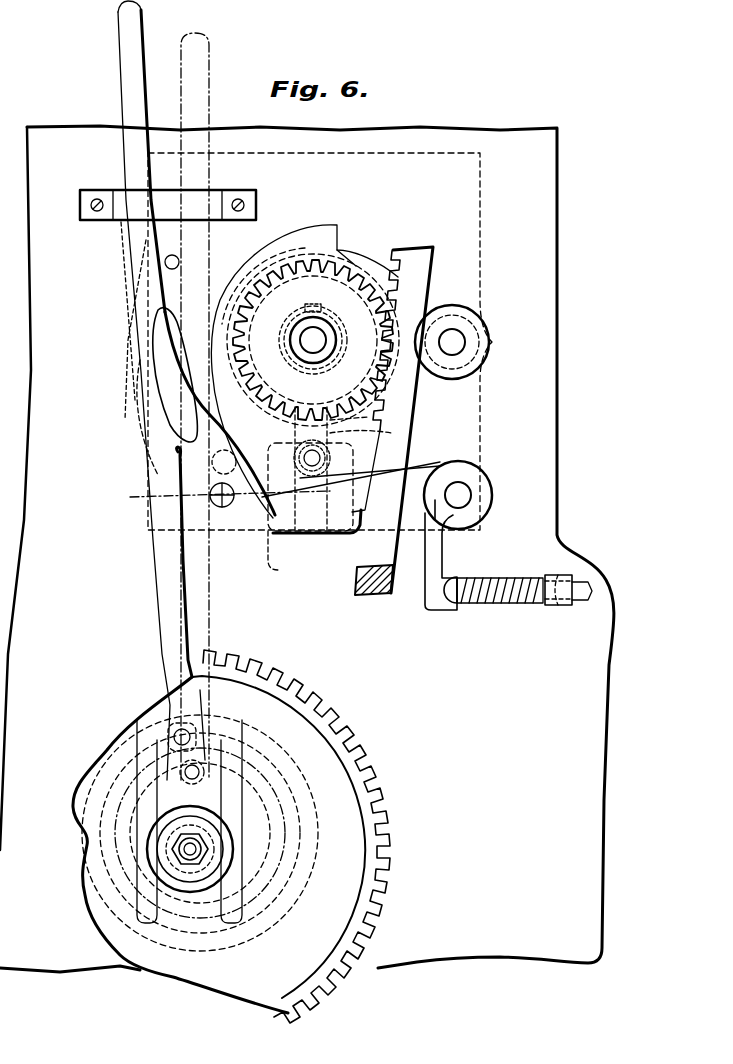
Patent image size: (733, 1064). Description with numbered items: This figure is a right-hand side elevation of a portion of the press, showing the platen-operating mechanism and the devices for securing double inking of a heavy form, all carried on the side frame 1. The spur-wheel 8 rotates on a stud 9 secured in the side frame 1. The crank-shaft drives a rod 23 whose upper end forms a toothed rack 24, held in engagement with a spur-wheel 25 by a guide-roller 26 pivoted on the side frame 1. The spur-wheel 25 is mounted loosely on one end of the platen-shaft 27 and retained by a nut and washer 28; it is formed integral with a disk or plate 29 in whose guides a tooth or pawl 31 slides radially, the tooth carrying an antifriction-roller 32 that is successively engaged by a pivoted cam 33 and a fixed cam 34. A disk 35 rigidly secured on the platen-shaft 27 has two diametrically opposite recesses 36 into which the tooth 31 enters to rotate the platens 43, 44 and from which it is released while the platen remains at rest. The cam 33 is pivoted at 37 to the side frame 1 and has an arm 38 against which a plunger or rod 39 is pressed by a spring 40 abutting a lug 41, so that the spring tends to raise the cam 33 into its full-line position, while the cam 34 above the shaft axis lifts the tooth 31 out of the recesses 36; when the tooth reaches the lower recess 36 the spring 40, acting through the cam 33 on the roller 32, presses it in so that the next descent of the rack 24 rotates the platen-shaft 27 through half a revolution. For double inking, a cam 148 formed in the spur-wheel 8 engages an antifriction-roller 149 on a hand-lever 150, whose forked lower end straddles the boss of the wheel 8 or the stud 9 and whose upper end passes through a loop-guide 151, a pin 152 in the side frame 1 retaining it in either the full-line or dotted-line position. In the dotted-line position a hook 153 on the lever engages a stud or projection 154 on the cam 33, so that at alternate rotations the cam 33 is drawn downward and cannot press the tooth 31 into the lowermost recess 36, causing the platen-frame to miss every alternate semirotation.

The side frame 1 is at (307, 549).
The spur-wheel 8 is at (290, 690).
The stud 9 is at (222, 860).
The rod 23 is at (374, 558).
The toothed rack 24 is at (417, 284).
The spur-wheel 25 is at (313, 340).
The guide-roller 26 is at (484, 344).
The platen-shaft 27 is at (320, 345).
The nut and washer 28 is at (298, 341).
The disk or plate 29 is at (380, 268).
The tooth or pawl 31 is at (395, 417).
The antifriction-roller 32 is at (305, 533).
The cam 33 is at (160, 345).
The cam 34 is at (312, 238).
The disk 35 is at (395, 436).
The recesses 36 is at (343, 254).
The pivot 37 is at (466, 497).
The arm 38 is at (432, 600).
The plunger or rod 39 is at (513, 578).
The spring 40 is at (512, 604).
The lug 41 is at (565, 608).
The platen 43 is at (330, 153).
The platen 44 is at (272, 545).
The cam 148 is at (286, 827).
The antifriction-roller 149 is at (186, 766).
The hand-lever 150 is at (130, 92).
The loop-guide 151 is at (203, 200).
The pin 152 is at (179, 260).
The hook 153 is at (236, 458).
The stud or projection 154 is at (226, 510).